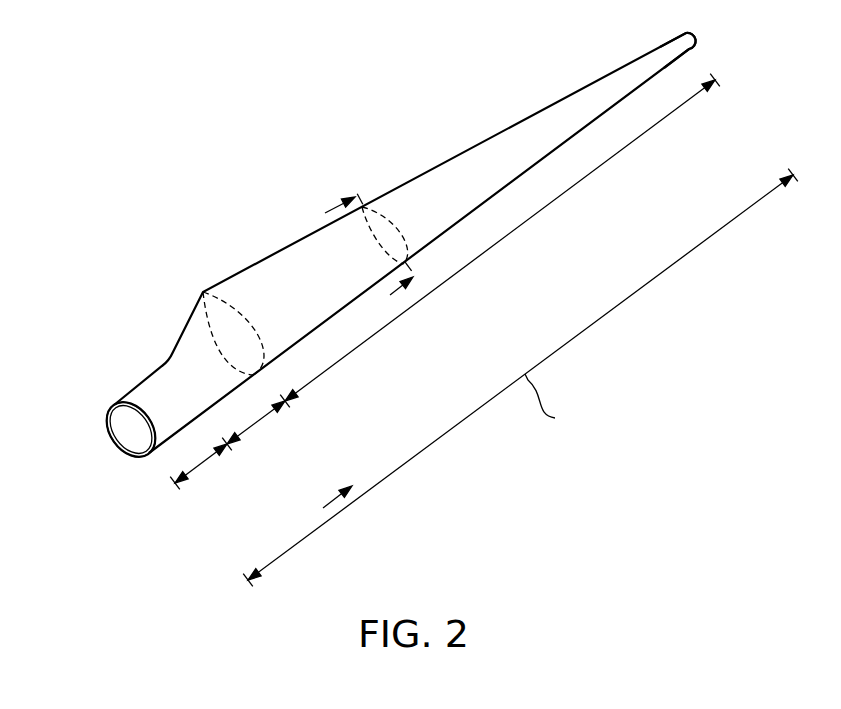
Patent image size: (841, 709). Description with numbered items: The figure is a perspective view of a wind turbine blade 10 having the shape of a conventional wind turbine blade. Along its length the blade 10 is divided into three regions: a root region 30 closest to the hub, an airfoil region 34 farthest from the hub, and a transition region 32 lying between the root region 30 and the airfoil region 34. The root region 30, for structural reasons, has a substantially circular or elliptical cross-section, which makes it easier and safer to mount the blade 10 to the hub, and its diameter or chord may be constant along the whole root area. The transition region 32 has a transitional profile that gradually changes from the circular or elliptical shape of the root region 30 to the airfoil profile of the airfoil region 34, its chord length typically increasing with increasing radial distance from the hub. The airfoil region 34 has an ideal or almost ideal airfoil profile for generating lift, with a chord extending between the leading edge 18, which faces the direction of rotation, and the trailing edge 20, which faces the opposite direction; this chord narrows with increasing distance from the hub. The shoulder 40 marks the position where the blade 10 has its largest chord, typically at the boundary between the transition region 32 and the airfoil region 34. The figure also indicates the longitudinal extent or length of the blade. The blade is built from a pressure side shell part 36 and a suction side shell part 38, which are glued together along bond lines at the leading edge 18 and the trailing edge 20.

The wind turbine blade 10 is at (230, 104).
The leading edge 18 is at (578, 133).
The trailing edge 20 is at (455, 157).
The root region 30 is at (202, 464).
The transition region 32 is at (257, 422).
The airfoil region 34 is at (492, 247).
The pressure side shell part 36 is at (118, 404).
The suction side shell part 38 is at (112, 404).
The shoulder 40 is at (203, 290).